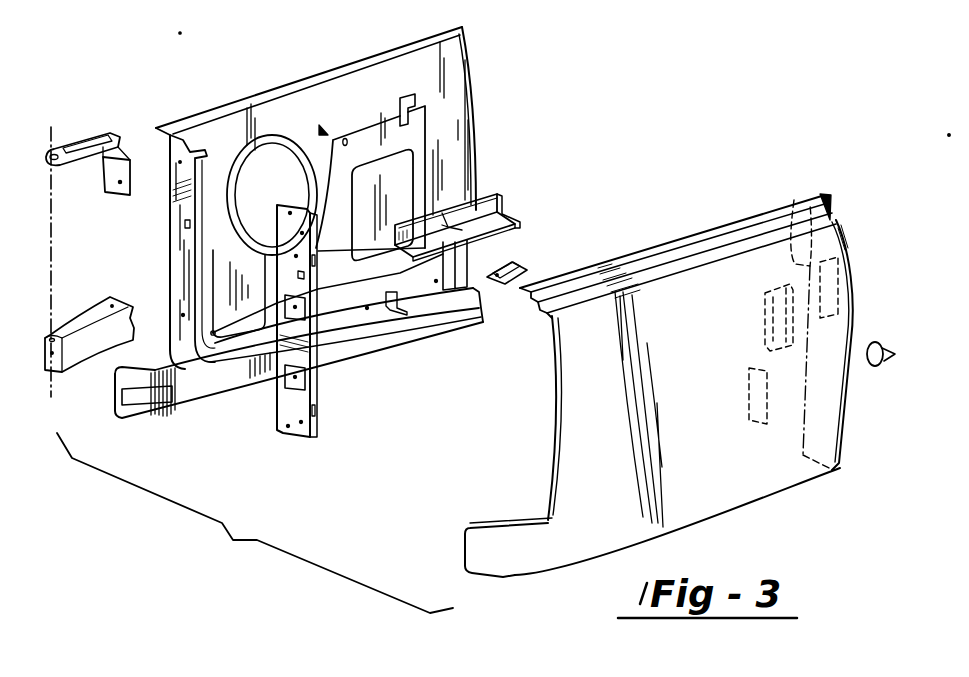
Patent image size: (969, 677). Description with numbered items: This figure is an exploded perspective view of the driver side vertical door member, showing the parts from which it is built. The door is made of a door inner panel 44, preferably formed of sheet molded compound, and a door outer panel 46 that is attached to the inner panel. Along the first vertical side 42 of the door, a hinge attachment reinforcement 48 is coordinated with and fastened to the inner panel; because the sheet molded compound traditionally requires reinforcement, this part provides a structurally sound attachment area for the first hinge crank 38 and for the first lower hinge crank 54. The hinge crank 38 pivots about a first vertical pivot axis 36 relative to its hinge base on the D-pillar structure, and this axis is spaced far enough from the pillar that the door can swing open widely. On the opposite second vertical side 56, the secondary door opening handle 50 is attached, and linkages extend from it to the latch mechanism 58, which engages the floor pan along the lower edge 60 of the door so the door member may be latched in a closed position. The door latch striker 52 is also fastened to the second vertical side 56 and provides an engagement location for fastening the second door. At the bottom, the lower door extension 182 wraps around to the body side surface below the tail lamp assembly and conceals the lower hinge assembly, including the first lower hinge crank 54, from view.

The first vertical pivot axis 36 is at (60, 292).
The first hinge crank 38 is at (77, 143).
The first vertical side 42 is at (182, 255).
The door inner panel 44 is at (413, 70).
The door outer panel 46 is at (590, 416).
The hinge attachment reinforcement 48 is at (303, 383).
The secondary door opening handle 50 is at (765, 312).
The door latch striker 52 is at (877, 367).
The first lower hinge crank 54 is at (100, 312).
The second vertical side 56 is at (790, 198).
The latch mechanism 58 is at (525, 276).
The lower edge 60 is at (440, 308).
The lower door extension 182 is at (510, 543).